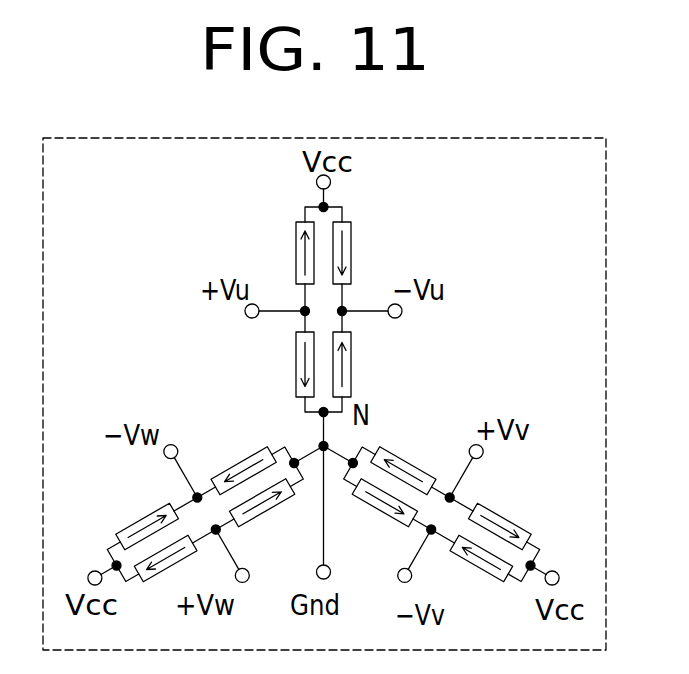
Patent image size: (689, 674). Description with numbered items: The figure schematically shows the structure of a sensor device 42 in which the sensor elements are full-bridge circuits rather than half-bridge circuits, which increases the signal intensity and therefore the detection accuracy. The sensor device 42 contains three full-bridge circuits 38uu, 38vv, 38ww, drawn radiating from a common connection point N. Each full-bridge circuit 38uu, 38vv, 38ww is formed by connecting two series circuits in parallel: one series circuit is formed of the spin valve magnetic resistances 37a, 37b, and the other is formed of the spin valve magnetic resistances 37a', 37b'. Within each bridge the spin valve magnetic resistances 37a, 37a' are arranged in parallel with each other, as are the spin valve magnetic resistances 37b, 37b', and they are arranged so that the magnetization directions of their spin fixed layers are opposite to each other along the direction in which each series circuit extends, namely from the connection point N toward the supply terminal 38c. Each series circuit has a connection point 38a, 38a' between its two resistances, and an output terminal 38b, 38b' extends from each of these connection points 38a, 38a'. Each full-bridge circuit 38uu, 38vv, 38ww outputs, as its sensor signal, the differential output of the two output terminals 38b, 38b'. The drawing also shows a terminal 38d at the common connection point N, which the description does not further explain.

The spin valve magnetic resistance 37a is at (352, 434).
The spin valve magnetic resistance 37a' is at (316, 432).
The spin valve magnetic resistance 37b is at (328, 452).
The spin valve magnetic resistance 37b' is at (323, 459).
The connection point 38a is at (322, 450).
The connection point 38a' is at (327, 455).
The output terminal 38b is at (375, 478).
The output terminal 38b' is at (285, 480).
The supply terminal 38c is at (317, 182).
The ground terminal 38d is at (328, 566).
The full-bridge circuit 38uu is at (545, 202).
The full-bridge circuit 38vv is at (528, 368).
The full-bridge circuit 38ww is at (188, 413).
The sensor device 42 is at (322, 138).